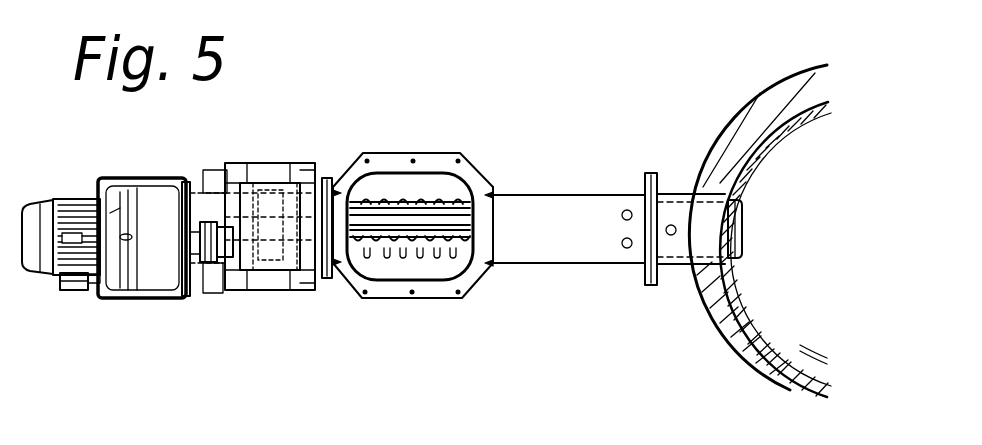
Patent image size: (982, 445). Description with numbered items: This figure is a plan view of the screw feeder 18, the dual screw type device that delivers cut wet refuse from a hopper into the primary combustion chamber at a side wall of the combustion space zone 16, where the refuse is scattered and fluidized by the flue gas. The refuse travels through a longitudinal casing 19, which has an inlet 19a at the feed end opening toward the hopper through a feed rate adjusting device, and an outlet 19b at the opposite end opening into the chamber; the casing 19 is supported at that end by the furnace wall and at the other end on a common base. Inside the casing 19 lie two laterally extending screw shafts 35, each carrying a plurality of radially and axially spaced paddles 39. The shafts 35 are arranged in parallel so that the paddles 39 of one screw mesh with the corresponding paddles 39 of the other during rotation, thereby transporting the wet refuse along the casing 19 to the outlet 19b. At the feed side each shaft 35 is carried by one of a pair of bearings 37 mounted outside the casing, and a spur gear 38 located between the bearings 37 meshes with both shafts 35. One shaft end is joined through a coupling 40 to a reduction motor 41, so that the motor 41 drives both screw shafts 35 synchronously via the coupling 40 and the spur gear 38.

The combustion space zone 16 is at (787, 285).
The screw feeder 18 is at (565, 272).
The casing 19 is at (587, 193).
The inlet of the casing 19a is at (490, 193).
The outlet of the casing 19b is at (743, 227).
The screw shaft 35 is at (393, 207).
The bearing 37 is at (240, 287).
The spur gear 38 is at (281, 165).
The paddles 39 is at (430, 207).
The coupling 40 is at (193, 300).
The reduction motor 41 is at (38, 277).